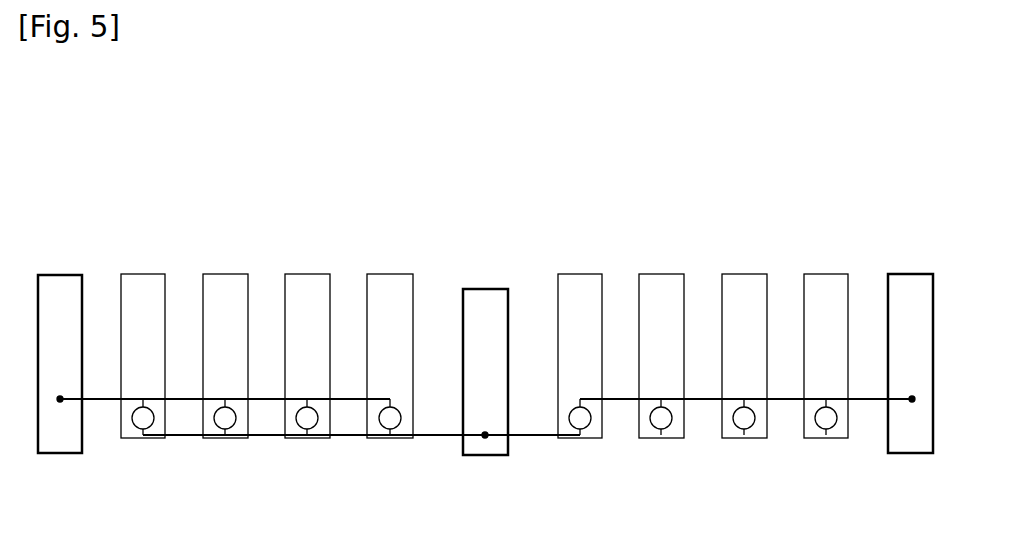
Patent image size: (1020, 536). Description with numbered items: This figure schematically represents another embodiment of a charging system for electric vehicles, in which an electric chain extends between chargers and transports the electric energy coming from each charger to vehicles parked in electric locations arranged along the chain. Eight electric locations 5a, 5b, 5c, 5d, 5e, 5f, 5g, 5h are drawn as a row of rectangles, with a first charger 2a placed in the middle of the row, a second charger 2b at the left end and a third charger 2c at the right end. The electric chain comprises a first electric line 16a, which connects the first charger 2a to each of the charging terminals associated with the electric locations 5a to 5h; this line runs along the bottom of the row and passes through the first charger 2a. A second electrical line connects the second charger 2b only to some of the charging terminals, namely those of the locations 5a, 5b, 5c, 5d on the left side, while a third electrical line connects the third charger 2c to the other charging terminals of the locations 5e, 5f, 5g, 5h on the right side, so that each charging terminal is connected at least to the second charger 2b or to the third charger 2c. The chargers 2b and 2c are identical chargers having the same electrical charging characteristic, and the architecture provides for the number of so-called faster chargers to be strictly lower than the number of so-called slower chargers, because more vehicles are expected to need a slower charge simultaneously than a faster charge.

The first charger 2a is at (487, 288).
The second charger 2b is at (62, 273).
The third charger 2c is at (912, 273).
The electric location 5a is at (131, 252).
The electric location 5b is at (213, 252).
The electric location 5c is at (295, 252).
The electric location 5d is at (378, 252).
The electric location 5e is at (568, 252).
The electric location 5f is at (650, 252).
The electric location 5g is at (732, 252).
The electric location 5h is at (814, 252).
The first electric line 16a is at (433, 435).